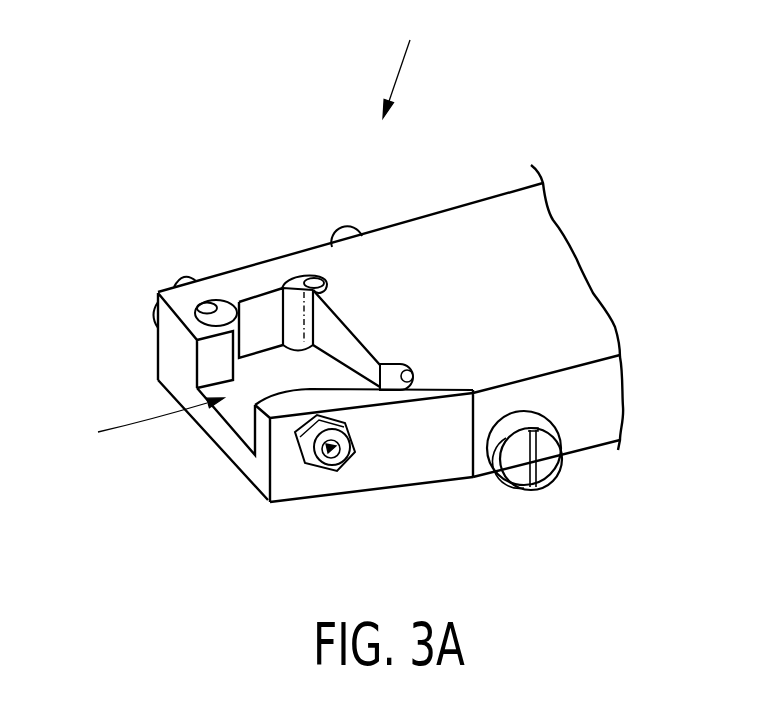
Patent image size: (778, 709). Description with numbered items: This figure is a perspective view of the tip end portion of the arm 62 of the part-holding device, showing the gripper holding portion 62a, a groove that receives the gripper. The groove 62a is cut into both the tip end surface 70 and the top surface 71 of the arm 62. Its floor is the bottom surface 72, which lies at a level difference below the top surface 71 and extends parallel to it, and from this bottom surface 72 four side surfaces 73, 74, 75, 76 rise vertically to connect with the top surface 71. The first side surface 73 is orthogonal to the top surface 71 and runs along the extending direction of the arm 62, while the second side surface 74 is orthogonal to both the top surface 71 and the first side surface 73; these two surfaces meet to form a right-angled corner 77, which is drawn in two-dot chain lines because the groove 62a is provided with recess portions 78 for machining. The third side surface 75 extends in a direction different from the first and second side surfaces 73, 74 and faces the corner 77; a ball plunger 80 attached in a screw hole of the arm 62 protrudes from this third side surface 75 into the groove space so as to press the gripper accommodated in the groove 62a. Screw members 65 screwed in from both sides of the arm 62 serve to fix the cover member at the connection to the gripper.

The arm 62 is at (425, 38).
The gripper holding portion 62a is at (140, 422).
The screw members 65 is at (348, 226).
The tip end surface 70 is at (173, 357).
The top surface 71 is at (440, 243).
The bottom surface 72 is at (236, 413).
The first side surface 73 is at (256, 325).
The second side surface 74 is at (333, 348).
The third side surface 75 is at (326, 383).
The side surface 76 is at (218, 304).
The corner 77 is at (294, 280).
The recess portions 78 is at (175, 280).
The ball plunger 80 is at (328, 475).